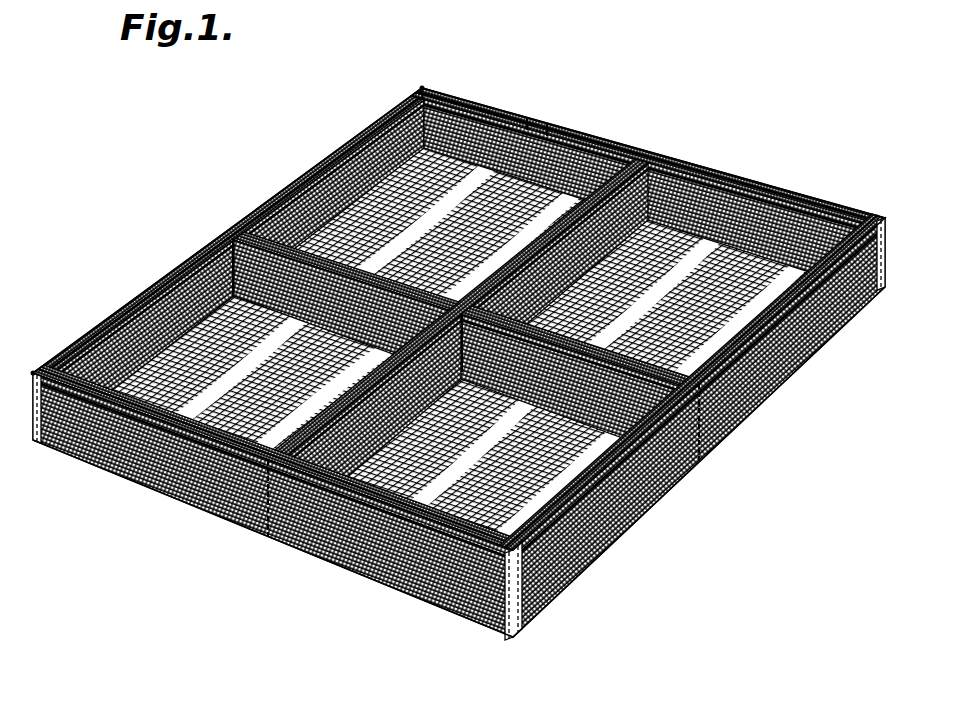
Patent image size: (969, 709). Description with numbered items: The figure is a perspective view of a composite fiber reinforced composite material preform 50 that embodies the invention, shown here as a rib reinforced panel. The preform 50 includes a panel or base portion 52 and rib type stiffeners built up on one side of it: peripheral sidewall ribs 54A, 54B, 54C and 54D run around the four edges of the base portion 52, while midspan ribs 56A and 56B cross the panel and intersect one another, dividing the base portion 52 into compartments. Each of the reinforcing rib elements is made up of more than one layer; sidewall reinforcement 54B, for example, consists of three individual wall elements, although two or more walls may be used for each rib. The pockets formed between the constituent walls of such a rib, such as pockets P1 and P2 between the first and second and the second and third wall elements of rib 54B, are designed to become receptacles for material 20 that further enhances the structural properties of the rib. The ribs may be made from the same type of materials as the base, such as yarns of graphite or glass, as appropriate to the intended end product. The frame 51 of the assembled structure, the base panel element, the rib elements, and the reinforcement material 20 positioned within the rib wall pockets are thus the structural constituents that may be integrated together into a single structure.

The composite fiber reinforced composite material preform 50 is at (462, 626).
The frame 51 is at (625, 533).
The panel or base portion 52 is at (703, 262).
The peripheral sidewall rib 54A is at (165, 470).
The peripheral sidewall rib 54B is at (260, 203).
The peripheral sidewall rib 54C is at (607, 138).
The peripheral sidewall rib 54D is at (773, 372).
The midspan rib 56A is at (388, 447).
The midspan rib 56B is at (623, 397).
The material 20 is at (527, 123).
The pocket P1 is at (77, 350).
The pocket P2 is at (393, 115).